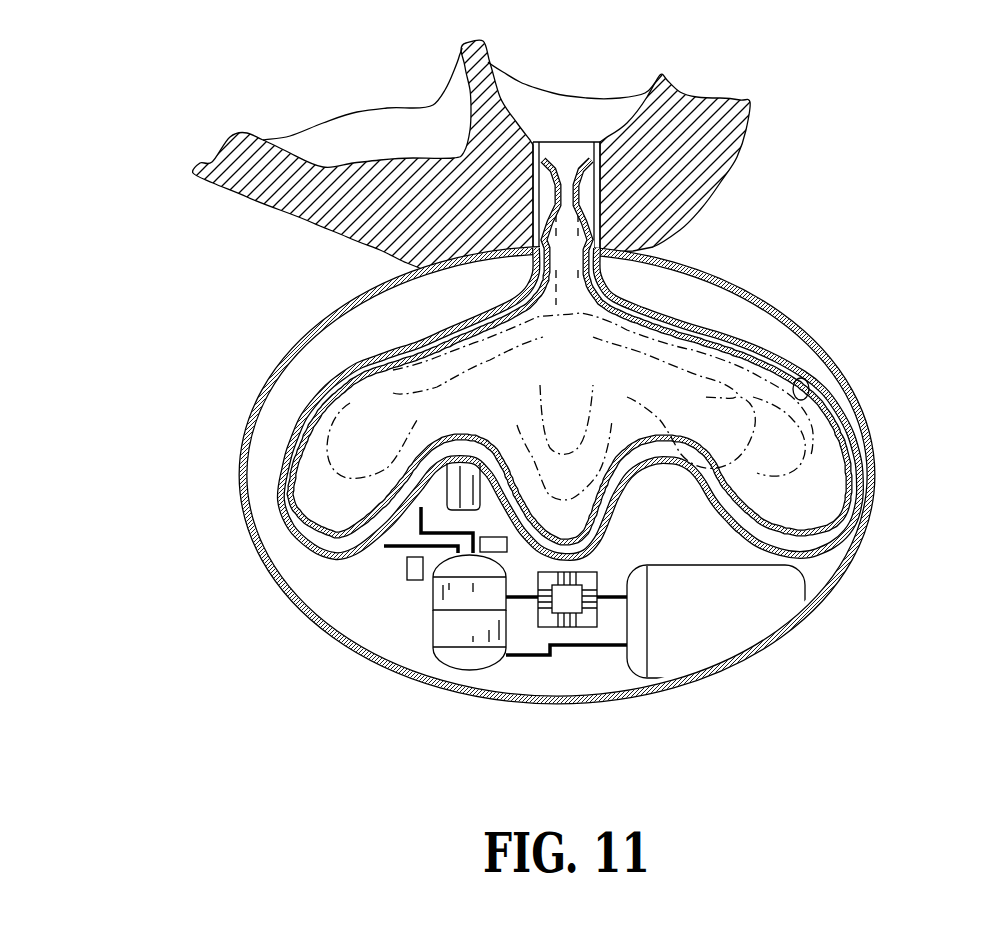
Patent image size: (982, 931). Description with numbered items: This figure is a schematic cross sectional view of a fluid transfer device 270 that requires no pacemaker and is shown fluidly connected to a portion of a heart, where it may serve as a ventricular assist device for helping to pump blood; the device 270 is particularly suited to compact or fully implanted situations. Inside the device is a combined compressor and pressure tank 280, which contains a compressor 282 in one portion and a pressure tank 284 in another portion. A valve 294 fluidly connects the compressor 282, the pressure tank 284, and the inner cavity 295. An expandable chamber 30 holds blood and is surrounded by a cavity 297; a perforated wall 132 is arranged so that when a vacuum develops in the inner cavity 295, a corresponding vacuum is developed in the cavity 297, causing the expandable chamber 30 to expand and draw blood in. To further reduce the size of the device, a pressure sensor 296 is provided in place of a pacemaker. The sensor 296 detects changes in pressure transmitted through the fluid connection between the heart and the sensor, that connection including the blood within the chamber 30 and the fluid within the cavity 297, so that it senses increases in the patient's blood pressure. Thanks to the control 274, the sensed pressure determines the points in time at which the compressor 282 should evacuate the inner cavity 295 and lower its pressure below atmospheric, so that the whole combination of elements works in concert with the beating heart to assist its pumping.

The fluid transfer device 270 is at (574, 462).
The expandable chamber 30 is at (817, 397).
The perforated wall 132 is at (847, 567).
The cavity 297 is at (665, 448).
The pressure sensor 296 is at (446, 462).
The valve 294 is at (492, 540).
The inner cavity 295 is at (691, 534).
The combined compressor and pressure tank 280 is at (355, 628).
The compressor 282 is at (452, 593).
The pressure tank 284 is at (452, 632).
The control 274 is at (560, 603).